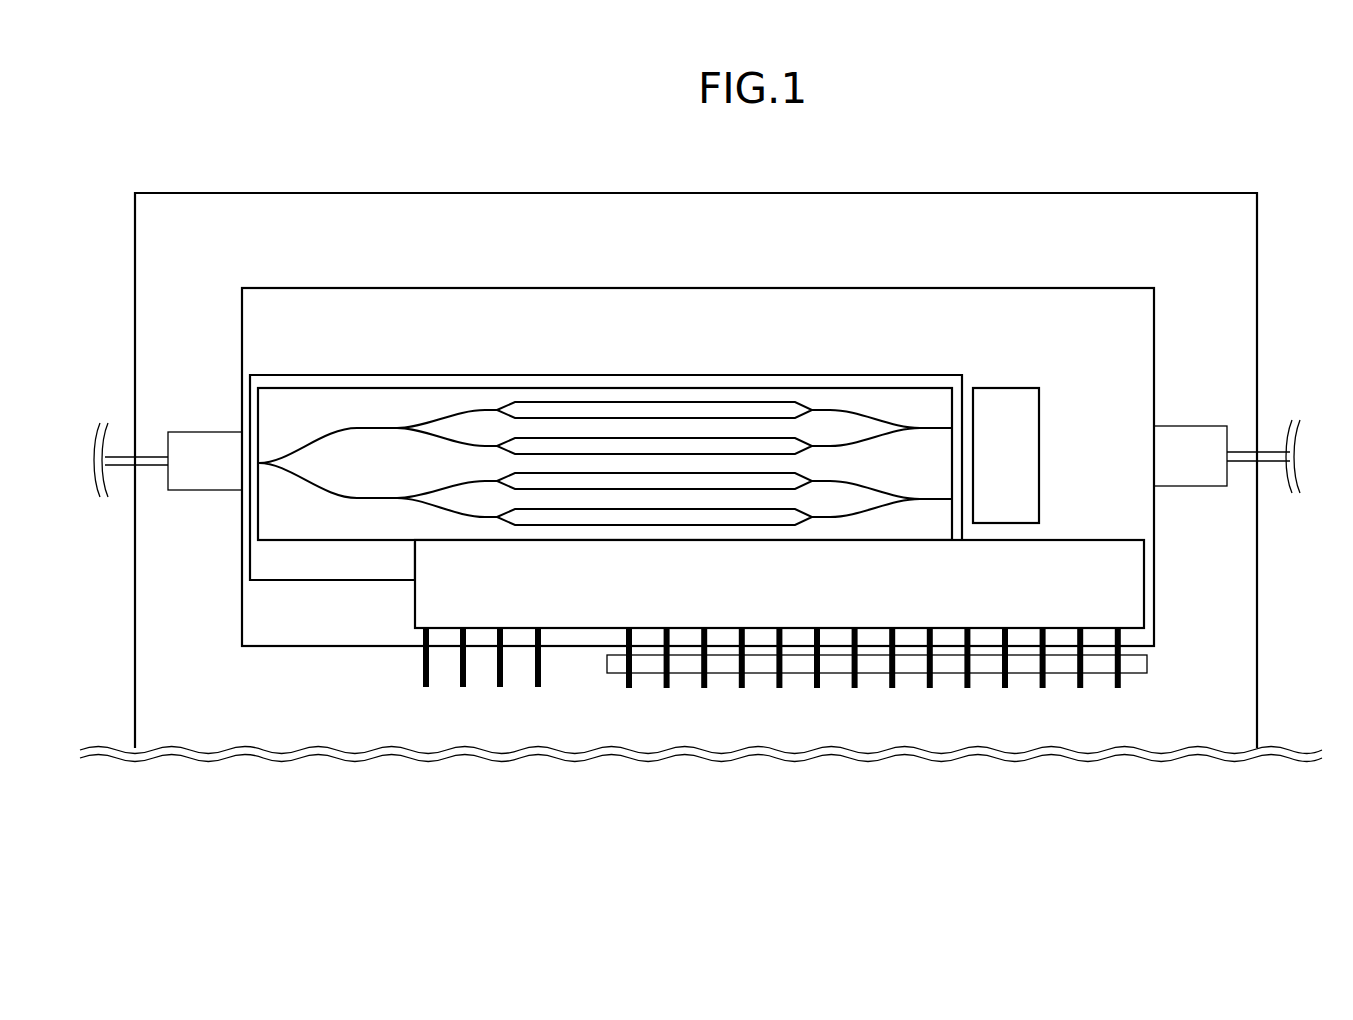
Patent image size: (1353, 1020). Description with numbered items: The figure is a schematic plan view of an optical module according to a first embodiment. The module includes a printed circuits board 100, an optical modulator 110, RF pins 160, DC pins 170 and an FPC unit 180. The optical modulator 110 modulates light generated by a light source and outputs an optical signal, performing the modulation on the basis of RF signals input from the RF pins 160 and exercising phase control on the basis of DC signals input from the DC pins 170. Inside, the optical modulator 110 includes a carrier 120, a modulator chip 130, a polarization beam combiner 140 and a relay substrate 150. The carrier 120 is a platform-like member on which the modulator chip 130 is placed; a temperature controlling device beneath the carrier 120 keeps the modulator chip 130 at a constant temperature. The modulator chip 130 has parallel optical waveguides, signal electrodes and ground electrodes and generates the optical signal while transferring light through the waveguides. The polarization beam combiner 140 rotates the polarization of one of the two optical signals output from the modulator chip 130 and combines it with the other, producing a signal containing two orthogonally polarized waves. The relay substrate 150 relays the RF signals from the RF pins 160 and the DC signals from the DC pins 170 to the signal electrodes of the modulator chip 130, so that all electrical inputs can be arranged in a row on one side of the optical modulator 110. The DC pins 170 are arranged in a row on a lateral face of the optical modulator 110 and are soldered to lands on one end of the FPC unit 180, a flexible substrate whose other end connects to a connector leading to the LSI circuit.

The printed circuits board 100 is at (1180, 193).
The optical modulator 110 is at (1078, 288).
The carrier 120 is at (886, 375).
The modulator chip 130 is at (323, 540).
The polarization beam combiner 140 is at (1003, 388).
The relay substrate 150 is at (1069, 540).
The RF pins 160 is at (548, 688).
The DC pins 170 is at (1130, 690).
The FPC unit 180 is at (1147, 664).